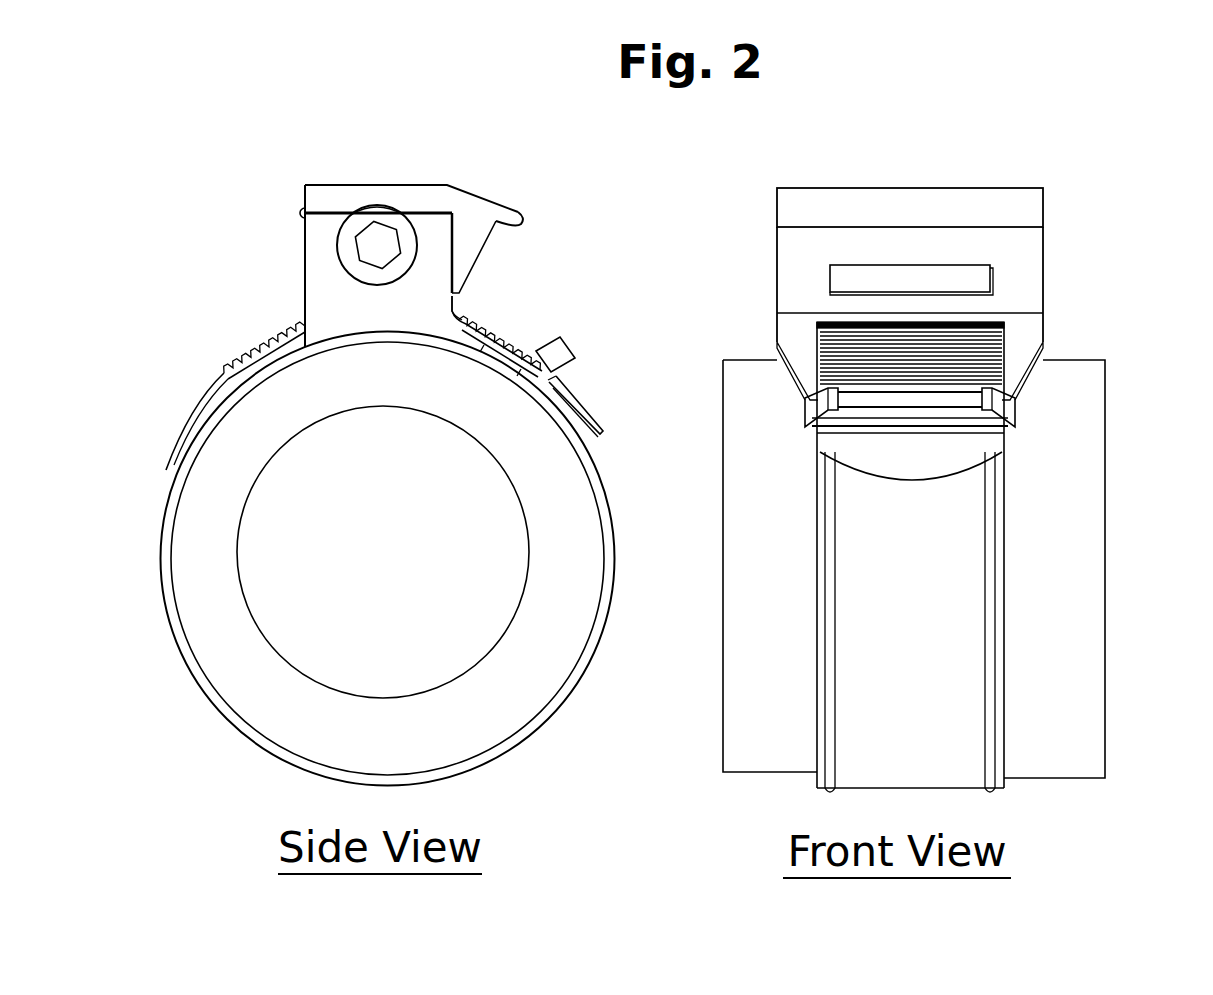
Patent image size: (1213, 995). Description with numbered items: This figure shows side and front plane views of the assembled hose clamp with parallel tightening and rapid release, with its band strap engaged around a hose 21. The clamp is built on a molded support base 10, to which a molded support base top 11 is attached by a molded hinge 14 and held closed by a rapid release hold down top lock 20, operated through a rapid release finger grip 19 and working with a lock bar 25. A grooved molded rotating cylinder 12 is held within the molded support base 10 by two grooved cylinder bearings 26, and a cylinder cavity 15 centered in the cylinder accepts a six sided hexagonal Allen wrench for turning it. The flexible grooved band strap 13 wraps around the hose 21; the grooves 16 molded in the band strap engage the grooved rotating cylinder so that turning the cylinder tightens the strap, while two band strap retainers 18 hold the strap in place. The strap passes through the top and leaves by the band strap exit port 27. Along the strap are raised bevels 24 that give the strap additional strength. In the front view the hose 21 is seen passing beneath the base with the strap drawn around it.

The molded support base 10 is at (335, 297).
The molded support base top 11 is at (430, 198).
The grooved molded rotating cylinder 12 is at (368, 212).
The flexible grooved band strap 13 is at (188, 425).
The molded hinge 14 is at (300, 207).
The cylinder cavity 15 is at (370, 245).
The grooves in band strap 16 is at (222, 372).
The band strap retainers 18 is at (572, 357).
The rapid release finger grip 19 is at (498, 213).
The rapid release hold down top lock 20 is at (462, 262).
The hose 21 is at (557, 500).
The raised bevels 24 is at (828, 492).
The lock bar 25 is at (940, 302).
The grooved cylinder bearings 26 is at (352, 252).
The band strap exit port 27 is at (1010, 325).